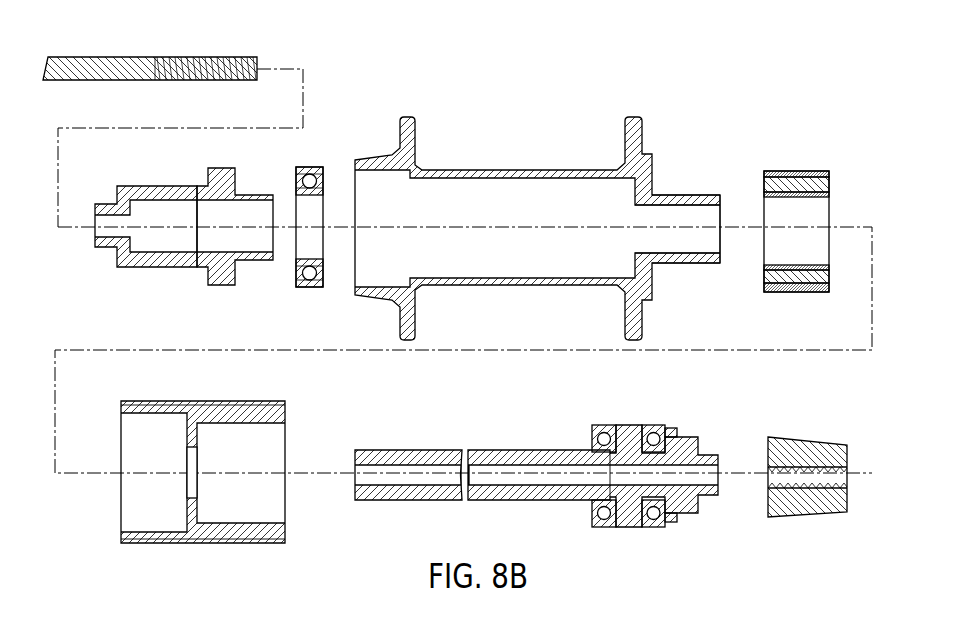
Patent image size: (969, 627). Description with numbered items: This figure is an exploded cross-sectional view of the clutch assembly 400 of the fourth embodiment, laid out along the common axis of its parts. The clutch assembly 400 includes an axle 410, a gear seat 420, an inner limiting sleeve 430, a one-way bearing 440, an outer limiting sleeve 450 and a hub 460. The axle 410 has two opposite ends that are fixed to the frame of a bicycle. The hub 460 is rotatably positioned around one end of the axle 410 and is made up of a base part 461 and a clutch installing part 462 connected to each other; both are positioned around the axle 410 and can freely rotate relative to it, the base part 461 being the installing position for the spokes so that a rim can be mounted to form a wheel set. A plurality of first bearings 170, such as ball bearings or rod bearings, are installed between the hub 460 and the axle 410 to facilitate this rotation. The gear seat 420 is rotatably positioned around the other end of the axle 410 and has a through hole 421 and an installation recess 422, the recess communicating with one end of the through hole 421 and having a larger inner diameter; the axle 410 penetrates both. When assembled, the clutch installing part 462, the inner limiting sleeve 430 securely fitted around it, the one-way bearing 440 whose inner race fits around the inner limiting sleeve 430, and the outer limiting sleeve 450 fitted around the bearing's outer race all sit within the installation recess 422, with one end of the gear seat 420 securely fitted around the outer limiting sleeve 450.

The clutch assembly 400 is at (512, 70).
The first bearings 170 is at (303, 288).
The hub 460 is at (537, 216).
The base part 461 is at (513, 169).
The clutch installing part 462 is at (690, 194).
The inner limiting sleeve 430 is at (785, 255).
The outer limiting sleeve 450 is at (790, 284).
The one-way bearing 440 is at (818, 293).
The gear seat 420 is at (205, 449).
The through hole 421 is at (257, 441).
The installation recess 422 is at (151, 441).
The axle 410 is at (698, 429).